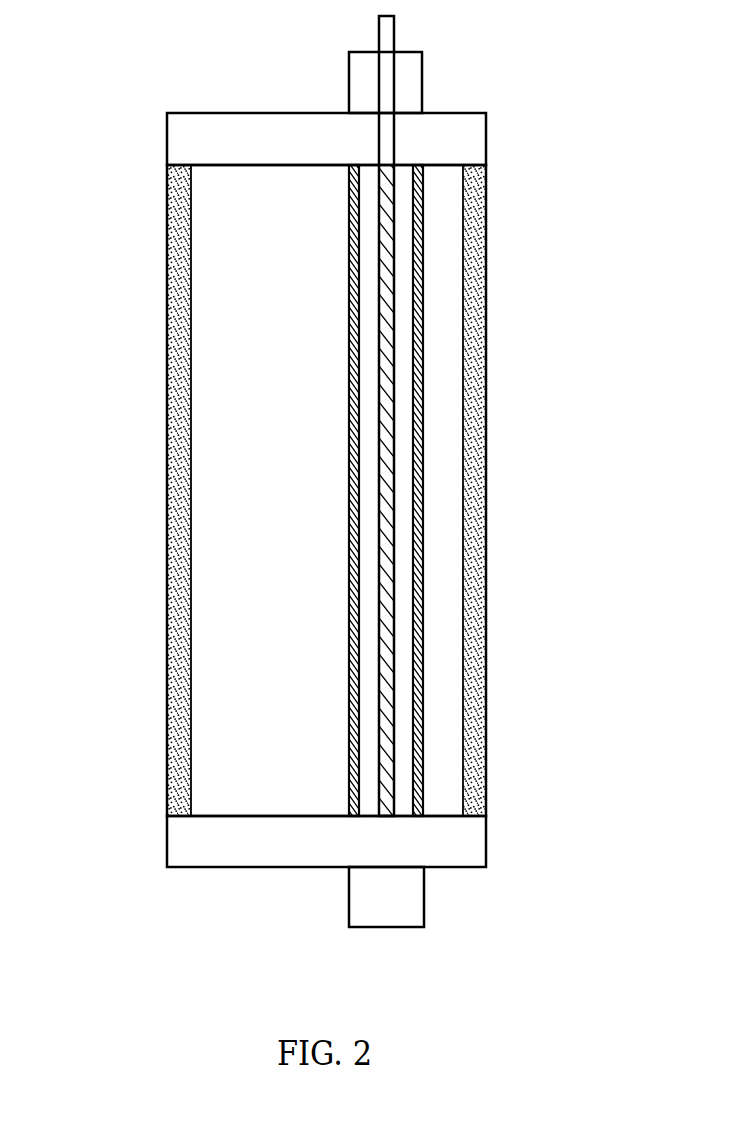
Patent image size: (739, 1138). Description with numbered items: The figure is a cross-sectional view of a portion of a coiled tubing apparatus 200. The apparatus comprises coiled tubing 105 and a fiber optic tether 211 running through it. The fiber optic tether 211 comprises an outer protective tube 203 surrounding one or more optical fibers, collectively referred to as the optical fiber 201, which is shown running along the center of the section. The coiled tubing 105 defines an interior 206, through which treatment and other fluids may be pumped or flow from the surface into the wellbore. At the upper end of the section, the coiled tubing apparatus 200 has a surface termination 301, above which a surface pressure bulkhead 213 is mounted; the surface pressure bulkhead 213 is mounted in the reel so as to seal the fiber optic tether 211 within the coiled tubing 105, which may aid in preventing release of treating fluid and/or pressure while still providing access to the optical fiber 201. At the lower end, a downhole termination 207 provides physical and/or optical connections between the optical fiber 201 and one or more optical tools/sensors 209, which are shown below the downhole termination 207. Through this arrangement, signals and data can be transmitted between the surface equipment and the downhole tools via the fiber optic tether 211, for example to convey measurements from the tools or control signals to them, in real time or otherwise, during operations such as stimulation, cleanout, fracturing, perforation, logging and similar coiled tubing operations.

The coiled tubing apparatus 200 is at (157, 55).
The surface pressure bulkhead 213 is at (422, 70).
The surface termination 301 is at (486, 135).
The outer protective tube 203 is at (423, 277).
The optical fiber 201 is at (388, 342).
The fiber optic tether 211 is at (438, 385).
The interior 206 is at (294, 305).
The coiled tubing 105 is at (486, 645).
The downhole termination 207 is at (486, 842).
The optical tools/sensors 209 is at (424, 895).